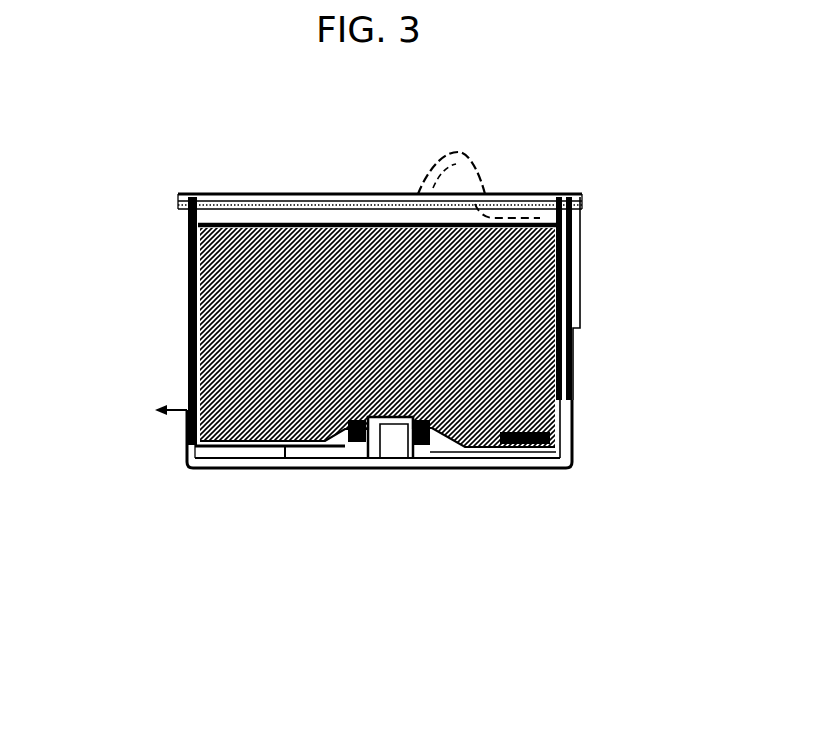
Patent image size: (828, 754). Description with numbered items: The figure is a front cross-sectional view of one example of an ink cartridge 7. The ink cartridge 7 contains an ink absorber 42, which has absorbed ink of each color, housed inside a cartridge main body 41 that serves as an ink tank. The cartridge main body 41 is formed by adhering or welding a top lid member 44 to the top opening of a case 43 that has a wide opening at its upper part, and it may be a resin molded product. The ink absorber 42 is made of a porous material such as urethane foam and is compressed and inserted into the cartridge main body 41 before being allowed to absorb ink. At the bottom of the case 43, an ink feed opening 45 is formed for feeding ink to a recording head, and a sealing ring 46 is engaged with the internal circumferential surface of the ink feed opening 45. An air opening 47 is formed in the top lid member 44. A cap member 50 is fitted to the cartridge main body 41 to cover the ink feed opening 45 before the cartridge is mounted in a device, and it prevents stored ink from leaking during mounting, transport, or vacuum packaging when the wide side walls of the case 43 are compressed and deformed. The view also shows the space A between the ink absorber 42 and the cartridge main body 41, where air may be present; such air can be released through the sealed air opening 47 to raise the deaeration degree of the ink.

The ink cartridge 7 is at (630, 208).
The cartridge main body 41 is at (185, 336).
The ink absorber 42 is at (571, 360).
The case 43 is at (187, 272).
The top lid member 44 is at (358, 196).
The ink feed opening 45 is at (372, 458).
The sealing ring 46 is at (363, 460).
The air opening 47 is at (232, 195).
The cap member 50 is at (273, 458).
The space A is at (278, 218).